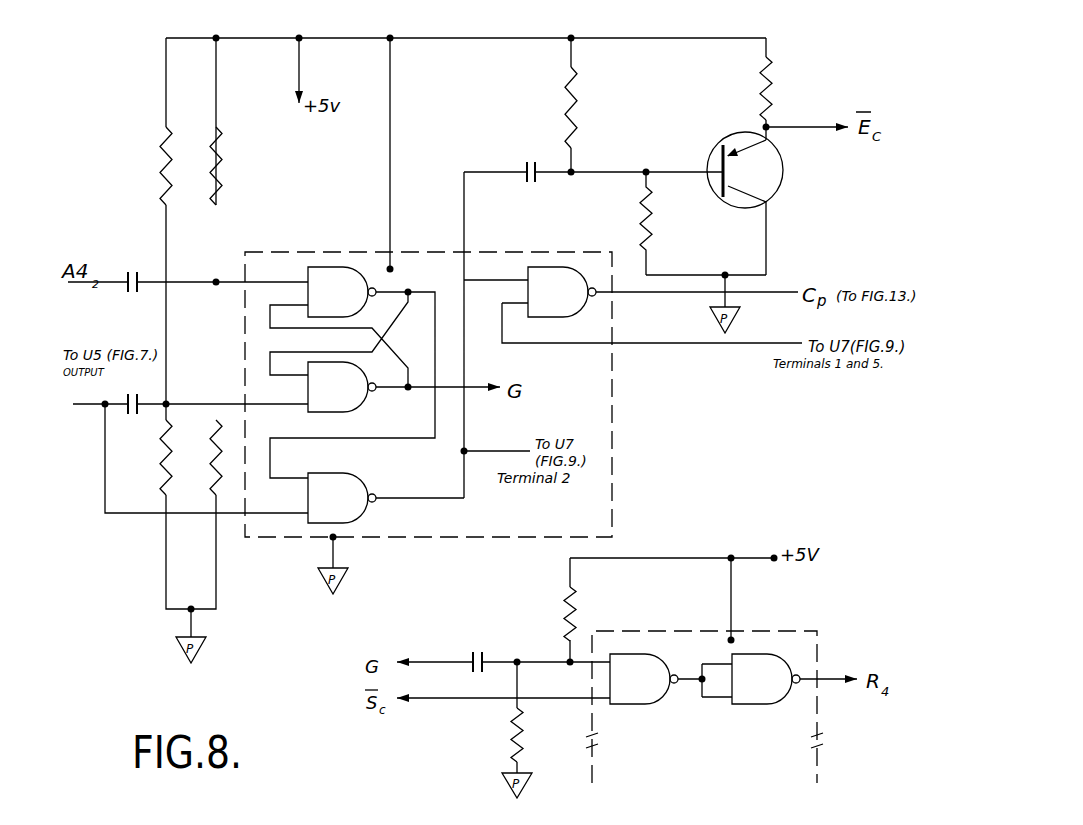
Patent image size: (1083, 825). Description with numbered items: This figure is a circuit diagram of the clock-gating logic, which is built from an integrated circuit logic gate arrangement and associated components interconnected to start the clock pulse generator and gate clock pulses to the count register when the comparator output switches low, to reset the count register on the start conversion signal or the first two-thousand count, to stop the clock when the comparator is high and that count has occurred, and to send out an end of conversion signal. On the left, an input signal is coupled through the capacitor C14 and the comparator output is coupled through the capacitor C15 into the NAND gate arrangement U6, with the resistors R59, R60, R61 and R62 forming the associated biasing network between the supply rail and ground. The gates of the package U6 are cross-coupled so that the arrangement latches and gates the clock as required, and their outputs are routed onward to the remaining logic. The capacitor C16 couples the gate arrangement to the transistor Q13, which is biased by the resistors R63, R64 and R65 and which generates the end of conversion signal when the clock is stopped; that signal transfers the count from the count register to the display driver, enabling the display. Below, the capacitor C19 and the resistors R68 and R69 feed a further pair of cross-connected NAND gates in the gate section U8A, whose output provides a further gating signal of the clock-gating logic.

The resistor R59 is at (148, 166).
The resistor R60 is at (234, 166).
The resistor R61 is at (149, 457).
The resistor R62 is at (201, 457).
The resistor R63 is at (593, 107).
The resistor R64 is at (742, 88).
The resistor R65 is at (666, 223).
The resistor R68 is at (549, 614).
The resistor R69 is at (495, 735).
The capacitor C14 is at (135, 272).
The capacitor C15 is at (135, 395).
The capacitor C16 is at (521, 163).
The capacitor C19 is at (475, 653).
The transistor Q13 is at (766, 203).
The integrated circuit logic gate arrangement U6 is at (505, 537).
The logic gate U8A is at (721, 700).